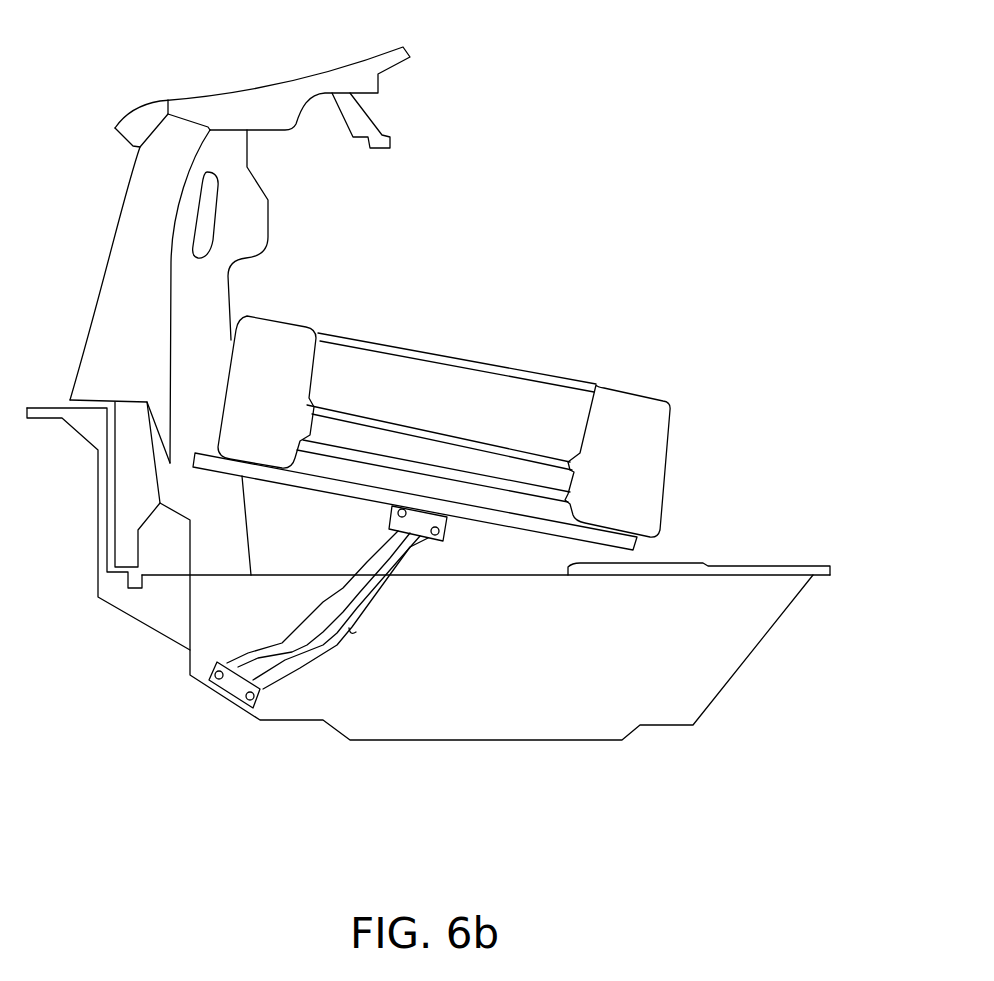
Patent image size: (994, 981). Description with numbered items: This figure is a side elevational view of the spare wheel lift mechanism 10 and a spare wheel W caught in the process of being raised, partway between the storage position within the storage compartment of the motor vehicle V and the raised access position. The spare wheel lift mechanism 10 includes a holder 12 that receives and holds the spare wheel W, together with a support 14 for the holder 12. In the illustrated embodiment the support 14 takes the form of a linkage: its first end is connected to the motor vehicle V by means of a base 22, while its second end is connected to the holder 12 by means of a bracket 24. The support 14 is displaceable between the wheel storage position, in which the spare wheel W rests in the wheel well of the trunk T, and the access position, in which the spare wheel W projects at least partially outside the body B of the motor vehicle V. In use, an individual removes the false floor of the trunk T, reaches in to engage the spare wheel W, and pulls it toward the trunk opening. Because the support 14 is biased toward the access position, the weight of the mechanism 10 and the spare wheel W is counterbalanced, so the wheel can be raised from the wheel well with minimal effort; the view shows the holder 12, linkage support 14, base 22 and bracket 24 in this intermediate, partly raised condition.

The body B is at (167, 100).
The motor vehicle V is at (616, 120).
The trunk T is at (309, 291).
The spare wheel W is at (585, 383).
The spare wheel lift mechanism 10 is at (257, 613).
The holder 12 is at (481, 523).
The support 14 is at (372, 597).
The base 22 is at (220, 699).
The bracket 24 is at (412, 531).